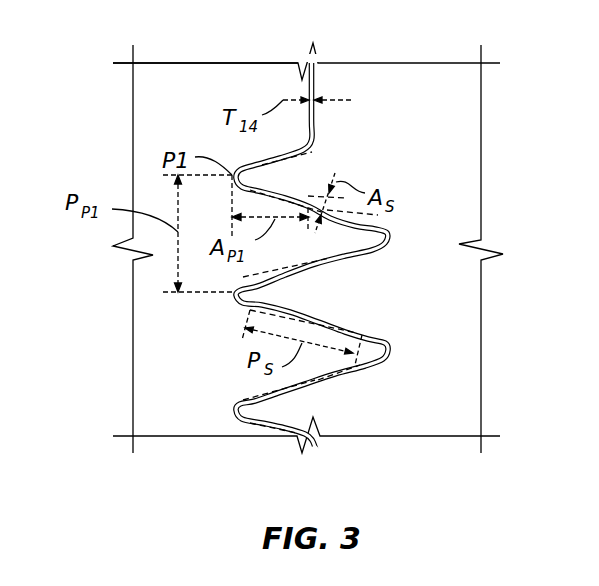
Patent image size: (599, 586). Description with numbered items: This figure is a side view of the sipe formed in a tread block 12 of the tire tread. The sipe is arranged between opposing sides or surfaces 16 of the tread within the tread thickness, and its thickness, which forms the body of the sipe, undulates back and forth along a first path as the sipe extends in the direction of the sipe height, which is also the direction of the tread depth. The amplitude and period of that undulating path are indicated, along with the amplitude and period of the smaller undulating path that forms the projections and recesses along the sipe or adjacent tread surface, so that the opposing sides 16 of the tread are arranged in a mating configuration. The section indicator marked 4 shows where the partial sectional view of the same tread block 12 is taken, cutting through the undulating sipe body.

The tread block 12 is at (222, 80).
The opposing sides or surfaces of the tread 16 is at (316, 125).
The section line 4- 4 is at (373, 63).